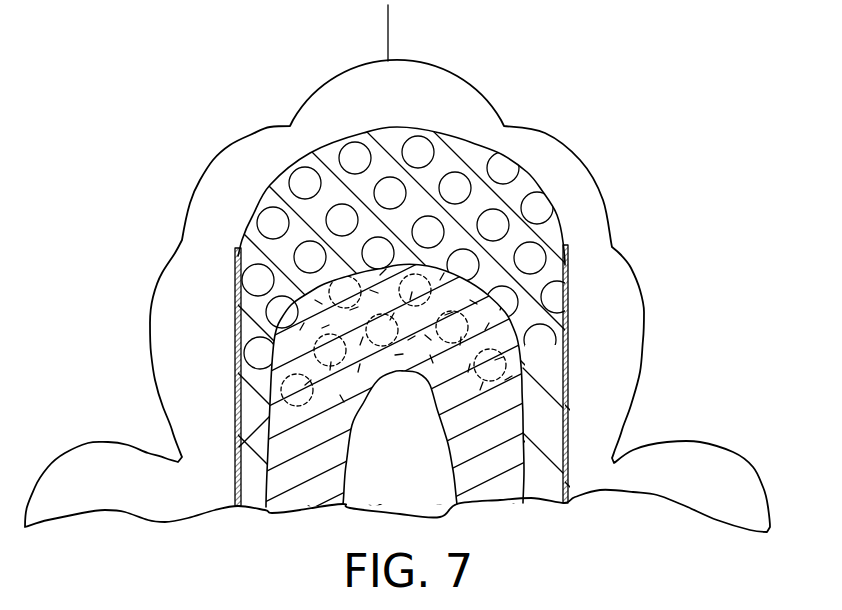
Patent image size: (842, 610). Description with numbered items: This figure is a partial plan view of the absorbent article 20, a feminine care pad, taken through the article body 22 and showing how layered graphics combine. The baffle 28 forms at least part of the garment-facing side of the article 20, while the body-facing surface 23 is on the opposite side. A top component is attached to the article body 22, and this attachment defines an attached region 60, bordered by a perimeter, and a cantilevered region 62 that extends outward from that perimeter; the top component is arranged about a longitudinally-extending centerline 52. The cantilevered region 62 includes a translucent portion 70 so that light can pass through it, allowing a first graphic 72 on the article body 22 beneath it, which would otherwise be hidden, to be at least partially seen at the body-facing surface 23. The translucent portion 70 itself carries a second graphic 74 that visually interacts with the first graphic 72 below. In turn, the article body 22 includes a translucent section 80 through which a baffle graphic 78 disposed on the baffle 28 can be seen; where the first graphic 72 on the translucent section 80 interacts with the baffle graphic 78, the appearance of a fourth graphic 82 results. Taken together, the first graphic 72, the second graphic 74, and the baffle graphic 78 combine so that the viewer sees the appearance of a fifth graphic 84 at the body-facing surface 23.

The absorbent article 20 is at (584, 125).
The article body 22 is at (460, 138).
The body-facing surface 23 is at (521, 197).
The baffle 28 is at (211, 142).
The longitudinally-extending centerline 52 is at (387, 35).
The attached region 60 is at (414, 473).
The cantilevered region 62 is at (520, 420).
The translucent portion 70 is at (495, 290).
The first graphic 72 is at (568, 225).
The second graphic 74 is at (521, 348).
The baffle graphic 78 is at (325, 218).
The translucent section 80 is at (280, 245).
The fourth graphic 82 is at (325, 148).
The fifth graphic 84 is at (545, 385).